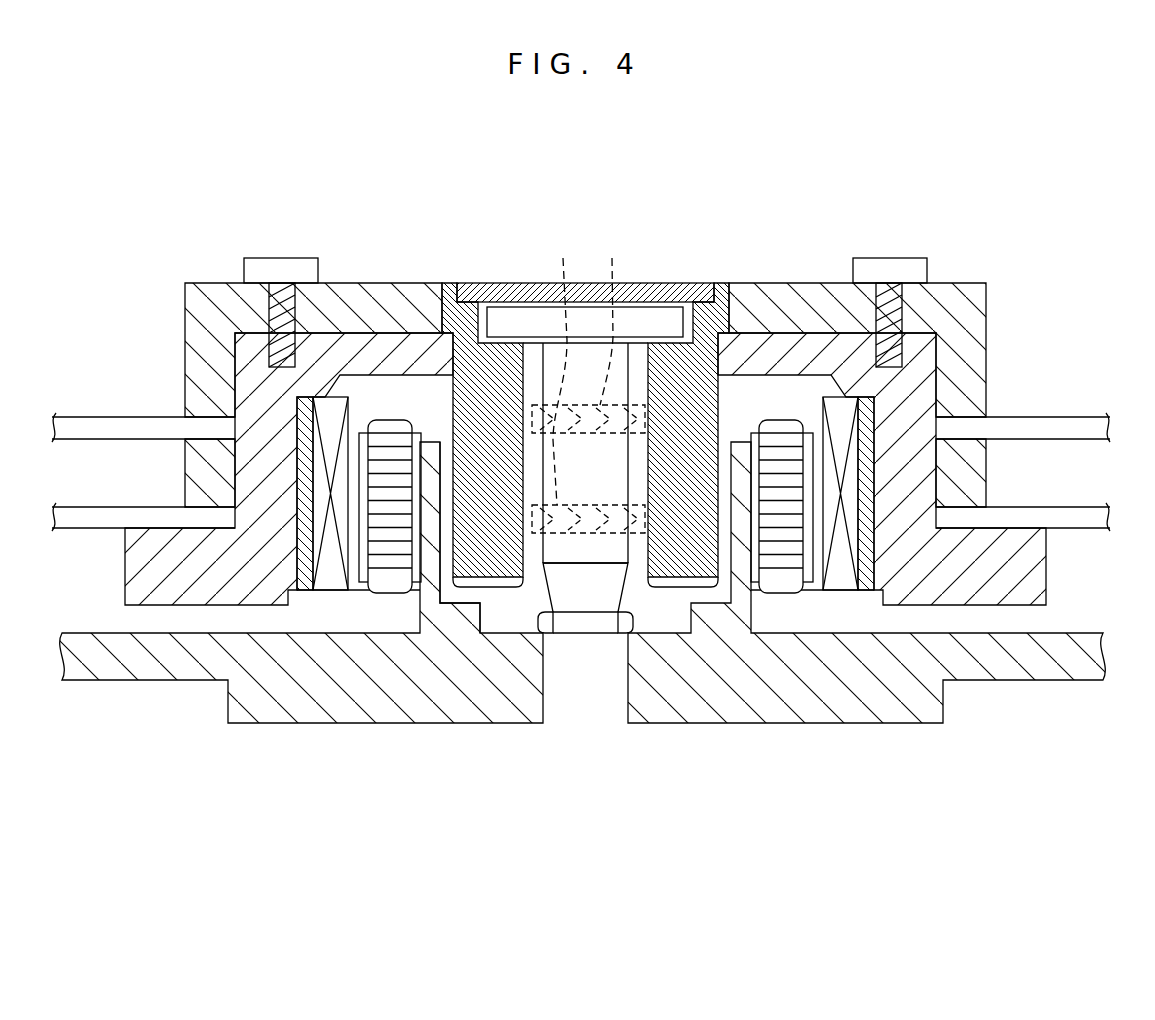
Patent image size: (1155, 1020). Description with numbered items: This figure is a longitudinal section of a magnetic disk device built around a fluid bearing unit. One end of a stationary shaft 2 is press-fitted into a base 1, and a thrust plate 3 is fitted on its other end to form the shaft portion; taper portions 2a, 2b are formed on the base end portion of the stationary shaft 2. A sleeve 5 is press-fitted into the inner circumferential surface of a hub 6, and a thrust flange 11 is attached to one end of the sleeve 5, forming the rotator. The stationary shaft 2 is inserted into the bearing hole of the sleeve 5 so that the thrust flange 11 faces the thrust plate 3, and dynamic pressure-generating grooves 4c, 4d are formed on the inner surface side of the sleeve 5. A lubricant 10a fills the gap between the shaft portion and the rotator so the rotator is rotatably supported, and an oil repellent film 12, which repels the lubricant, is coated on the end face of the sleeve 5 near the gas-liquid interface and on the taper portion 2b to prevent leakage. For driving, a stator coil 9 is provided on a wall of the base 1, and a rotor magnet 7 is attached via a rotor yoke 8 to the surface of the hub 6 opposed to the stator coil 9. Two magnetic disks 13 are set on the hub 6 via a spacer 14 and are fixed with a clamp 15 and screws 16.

The base 1 is at (920, 705).
The stationary shaft 2 is at (610, 707).
The taper portion 2a is at (630, 605).
The taper portion 2b is at (543, 617).
The thrust plate 3 is at (650, 320).
The dynamic pressure-generating groove 4c is at (588, 380).
The dynamic pressure-generating groove 4d is at (588, 366).
The sleeve 5 is at (470, 300).
The hub 6 is at (922, 357).
The rotor magnet 7 is at (843, 550).
The rotor yoke 8 is at (867, 440).
The stator coil 9 is at (393, 440).
The yoke block 10a is at (533, 478).
The thrust flange 11 is at (705, 283).
The oil repellent film 12 is at (543, 618).
The magnetic disk 13 is at (128, 518).
The spacer 14 is at (965, 470).
The clamp 15 is at (207, 312).
The screw 16 is at (892, 262).